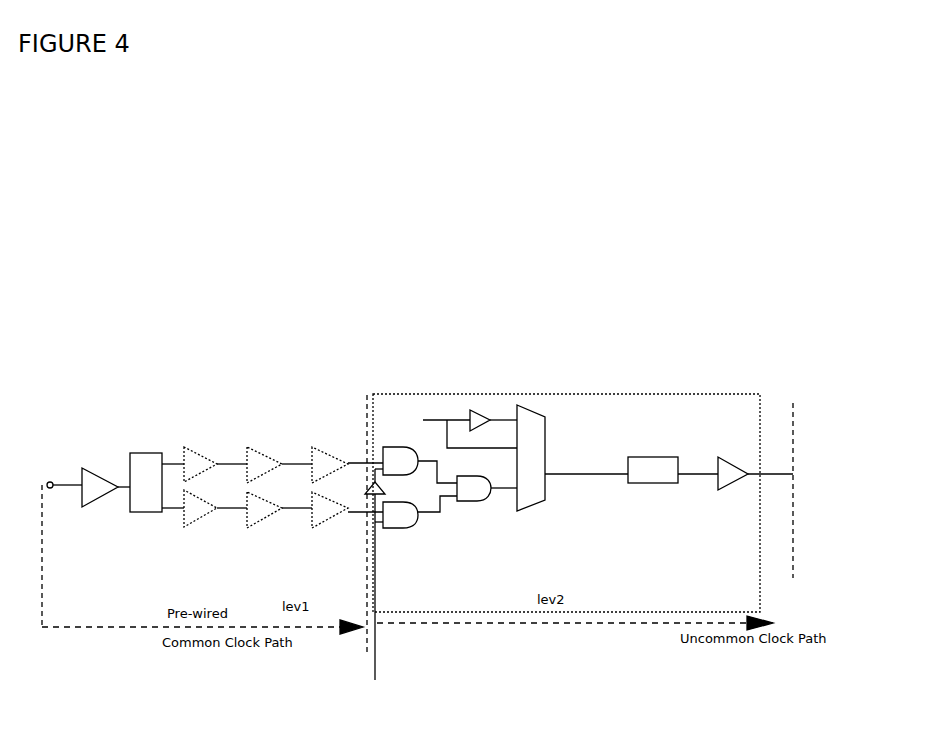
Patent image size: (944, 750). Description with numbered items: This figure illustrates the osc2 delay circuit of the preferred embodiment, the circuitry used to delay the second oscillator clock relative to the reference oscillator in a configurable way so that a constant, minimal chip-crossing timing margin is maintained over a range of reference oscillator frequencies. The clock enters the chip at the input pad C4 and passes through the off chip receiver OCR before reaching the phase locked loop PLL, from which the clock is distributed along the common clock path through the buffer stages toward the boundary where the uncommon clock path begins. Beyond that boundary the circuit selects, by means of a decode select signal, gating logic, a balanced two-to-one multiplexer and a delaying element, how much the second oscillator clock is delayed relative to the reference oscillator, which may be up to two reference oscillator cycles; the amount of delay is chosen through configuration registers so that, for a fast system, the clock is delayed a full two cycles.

The C4 input pad C4 is at (62, 475).
The off chip receiver OCR is at (88, 508).
The phase locked loop PLL is at (157, 474).